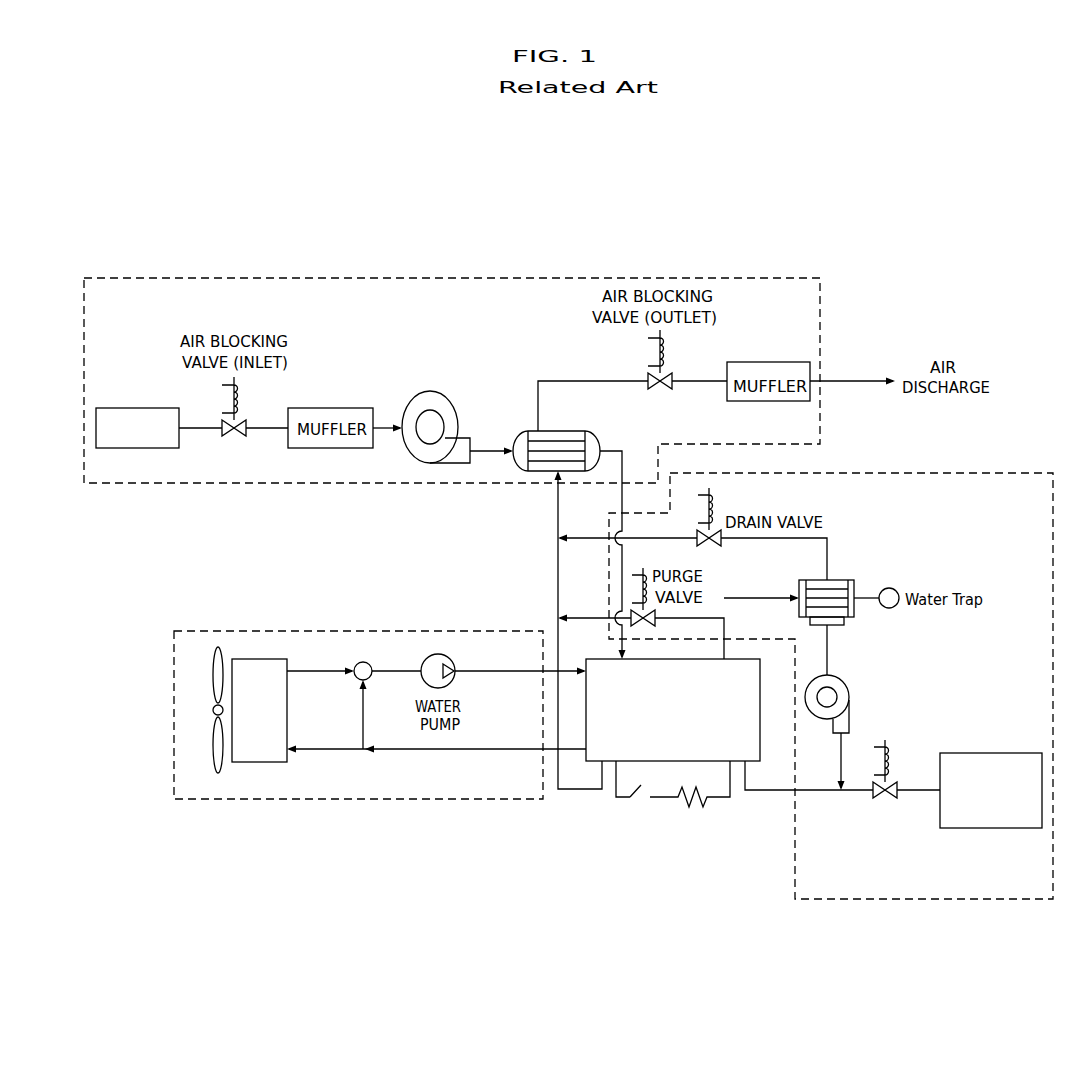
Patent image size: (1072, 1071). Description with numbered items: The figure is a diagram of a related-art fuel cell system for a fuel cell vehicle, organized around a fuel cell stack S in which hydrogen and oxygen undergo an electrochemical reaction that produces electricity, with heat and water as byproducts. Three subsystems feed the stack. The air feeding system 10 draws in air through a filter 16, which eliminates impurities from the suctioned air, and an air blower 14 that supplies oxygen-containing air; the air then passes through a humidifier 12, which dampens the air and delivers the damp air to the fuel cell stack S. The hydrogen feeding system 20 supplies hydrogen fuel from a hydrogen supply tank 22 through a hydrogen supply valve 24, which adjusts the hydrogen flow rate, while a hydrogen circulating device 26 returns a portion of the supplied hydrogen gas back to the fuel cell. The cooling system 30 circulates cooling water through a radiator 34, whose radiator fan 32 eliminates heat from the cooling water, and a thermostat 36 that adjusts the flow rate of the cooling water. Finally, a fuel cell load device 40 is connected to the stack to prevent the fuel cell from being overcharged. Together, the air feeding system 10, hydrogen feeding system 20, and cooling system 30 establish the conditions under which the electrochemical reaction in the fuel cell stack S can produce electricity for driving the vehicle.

The air feeding system 10 is at (320, 278).
The humidifier 12 is at (522, 431).
The air blower 14 is at (411, 459).
The filter 16 is at (137, 408).
The hydrogen feeding system 20 is at (1003, 473).
The hydrogen supplying tank 22 is at (990, 830).
The hydrogen supply valve 24 is at (897, 783).
The hydrogen circulating device 26 is at (846, 679).
The cooling system 30 is at (318, 799).
The radiator fan 32 is at (214, 745).
The radiator 34 is at (258, 672).
The thermostat 36 is at (366, 681).
The fuel cell stack S is at (598, 748).
The fuel cell load device 40 is at (672, 850).